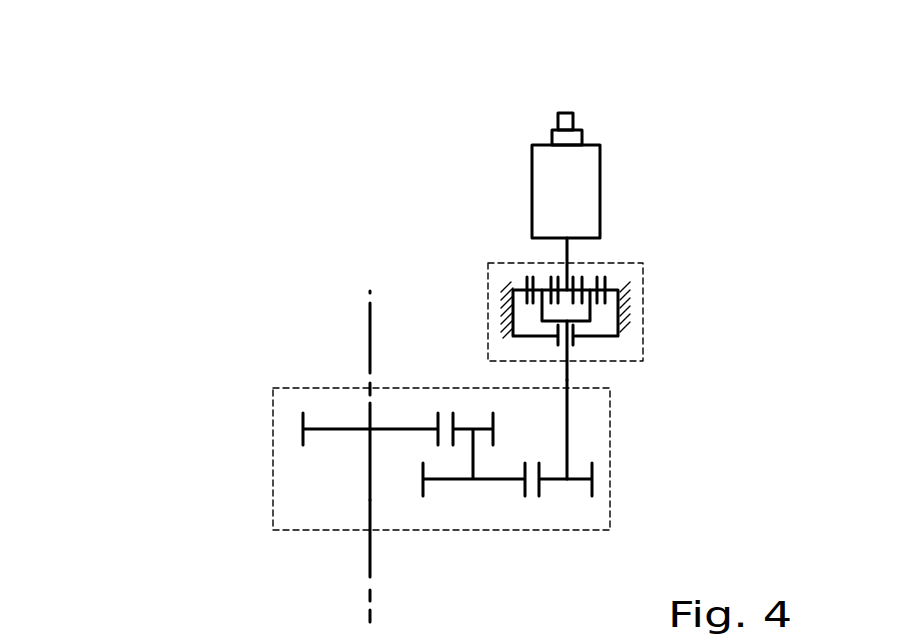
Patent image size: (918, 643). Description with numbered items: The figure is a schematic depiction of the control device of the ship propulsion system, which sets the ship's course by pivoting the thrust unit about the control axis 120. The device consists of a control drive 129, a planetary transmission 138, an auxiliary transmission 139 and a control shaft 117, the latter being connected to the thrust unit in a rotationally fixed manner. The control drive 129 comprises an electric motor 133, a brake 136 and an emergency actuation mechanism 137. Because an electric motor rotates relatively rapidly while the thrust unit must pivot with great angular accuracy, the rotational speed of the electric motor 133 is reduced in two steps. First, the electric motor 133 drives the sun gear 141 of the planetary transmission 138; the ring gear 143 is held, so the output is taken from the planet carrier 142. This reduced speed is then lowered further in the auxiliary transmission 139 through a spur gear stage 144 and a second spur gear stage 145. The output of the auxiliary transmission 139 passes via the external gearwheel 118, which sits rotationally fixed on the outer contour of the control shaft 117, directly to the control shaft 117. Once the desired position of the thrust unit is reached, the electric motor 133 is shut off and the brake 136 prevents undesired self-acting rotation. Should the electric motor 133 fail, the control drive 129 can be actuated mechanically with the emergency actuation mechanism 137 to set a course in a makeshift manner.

The control shaft 117 is at (370, 548).
The external gearwheel 118 is at (345, 429).
The control axis 120 is at (370, 318).
The control drive 129 is at (654, 153).
The electric motor 133 is at (568, 197).
The brake 136 is at (565, 137).
The emergency actuation mechanism 137 is at (565, 123).
The planetary transmission 138 is at (417, 198).
The auxiliary transmission 139 is at (417, 479).
The sun gear 141 is at (561, 288).
The planet carrier 142 is at (590, 311).
The ring gear 143 is at (513, 313).
The spur gear stage 144 is at (538, 479).
The spur gear stage 145 is at (445, 430).